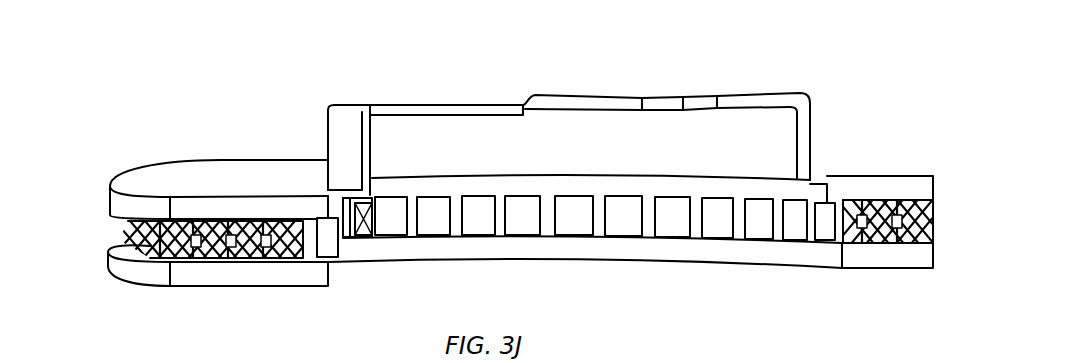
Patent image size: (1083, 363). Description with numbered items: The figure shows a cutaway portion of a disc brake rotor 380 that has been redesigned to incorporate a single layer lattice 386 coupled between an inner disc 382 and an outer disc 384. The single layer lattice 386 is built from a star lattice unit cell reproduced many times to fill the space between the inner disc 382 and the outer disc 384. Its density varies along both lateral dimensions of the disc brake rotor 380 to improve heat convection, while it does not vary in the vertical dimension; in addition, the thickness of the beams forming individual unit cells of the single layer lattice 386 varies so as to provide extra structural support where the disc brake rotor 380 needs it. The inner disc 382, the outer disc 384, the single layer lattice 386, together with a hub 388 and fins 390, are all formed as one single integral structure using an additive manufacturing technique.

The disc brake rotor 380 is at (219, 68).
The inner disc 382 is at (117, 200).
The outer disc 384 is at (121, 265).
The single layer lattice 386 is at (108, 233).
The hub 388 is at (668, 98).
The fins 390 is at (380, 234).